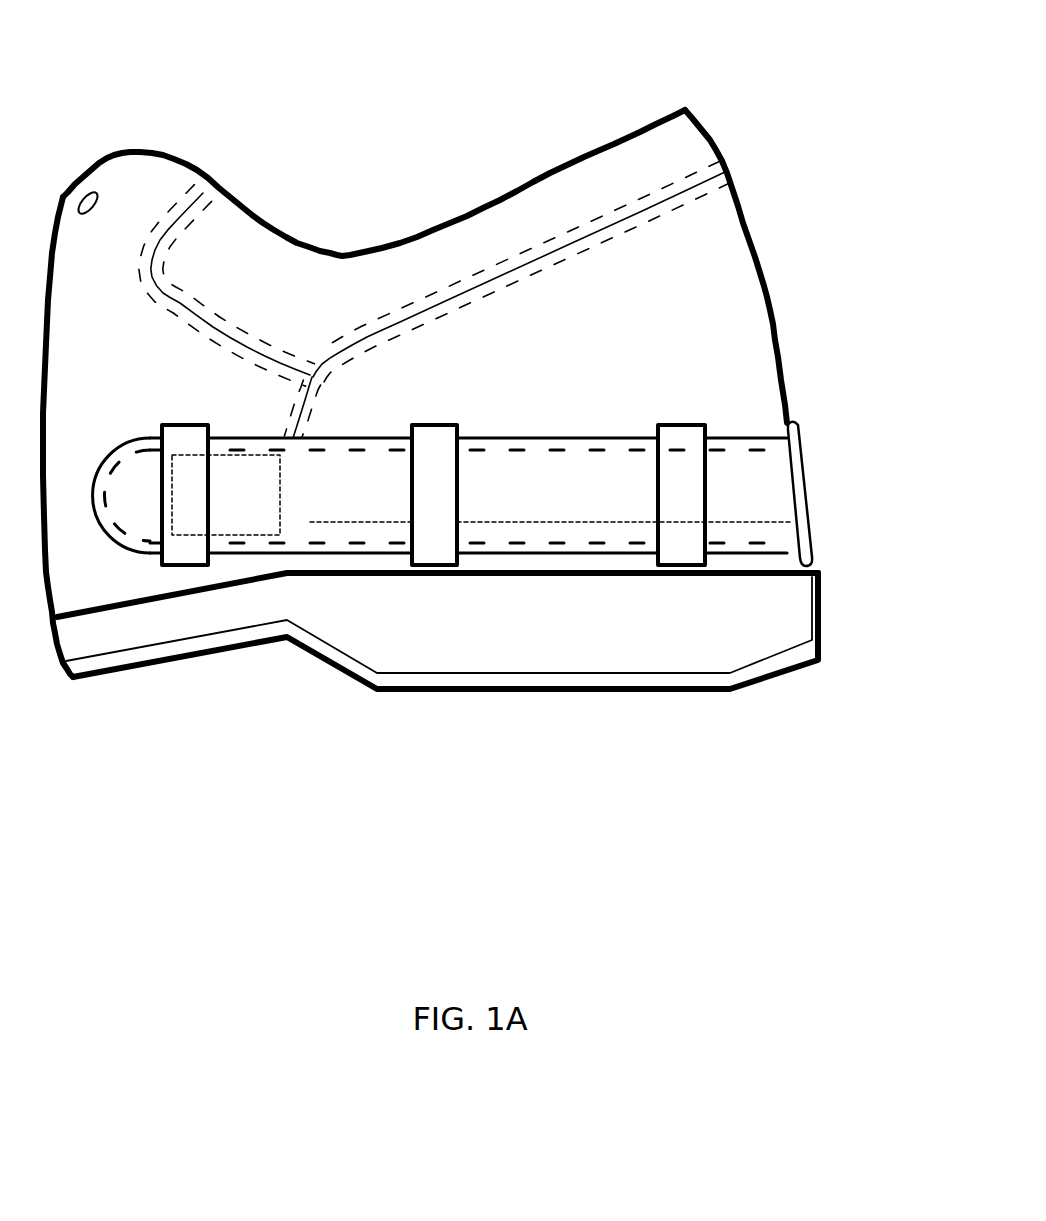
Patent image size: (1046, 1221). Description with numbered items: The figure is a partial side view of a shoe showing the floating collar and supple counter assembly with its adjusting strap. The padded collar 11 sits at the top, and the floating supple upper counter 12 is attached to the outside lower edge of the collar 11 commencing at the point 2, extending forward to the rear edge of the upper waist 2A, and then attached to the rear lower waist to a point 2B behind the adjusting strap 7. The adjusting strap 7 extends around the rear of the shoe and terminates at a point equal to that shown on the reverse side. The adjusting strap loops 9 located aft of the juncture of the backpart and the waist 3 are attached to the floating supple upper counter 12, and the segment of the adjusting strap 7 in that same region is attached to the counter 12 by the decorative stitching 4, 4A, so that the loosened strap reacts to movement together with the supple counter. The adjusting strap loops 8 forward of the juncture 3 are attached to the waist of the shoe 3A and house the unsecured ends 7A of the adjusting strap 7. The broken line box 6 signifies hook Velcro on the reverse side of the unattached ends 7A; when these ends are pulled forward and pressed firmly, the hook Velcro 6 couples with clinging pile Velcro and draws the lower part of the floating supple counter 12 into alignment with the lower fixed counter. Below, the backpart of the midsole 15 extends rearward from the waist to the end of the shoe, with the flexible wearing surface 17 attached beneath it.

The attachment commencing point 2 is at (728, 173).
The rear edge of the upper waist 2A is at (313, 373).
The attachment terminating point 2B is at (292, 483).
The juncture of the backpart and the waist 3 is at (285, 555).
The waist of the shoe 3A is at (163, 410).
The stitching 4 is at (505, 450).
The stitching 4A is at (555, 522).
The hook Velcro 6 is at (229, 520).
The adjusting strap 7 is at (752, 482).
The unsecured ends of the adjusting strap 7A is at (132, 497).
The adjusting strap loops 8 is at (185, 553).
The adjusting strap loops 9 is at (433, 500).
The collar 11 is at (682, 130).
The floating supple upper counter 12 is at (705, 313).
The midsole 15 is at (595, 608).
The wearing surface 17 is at (637, 683).